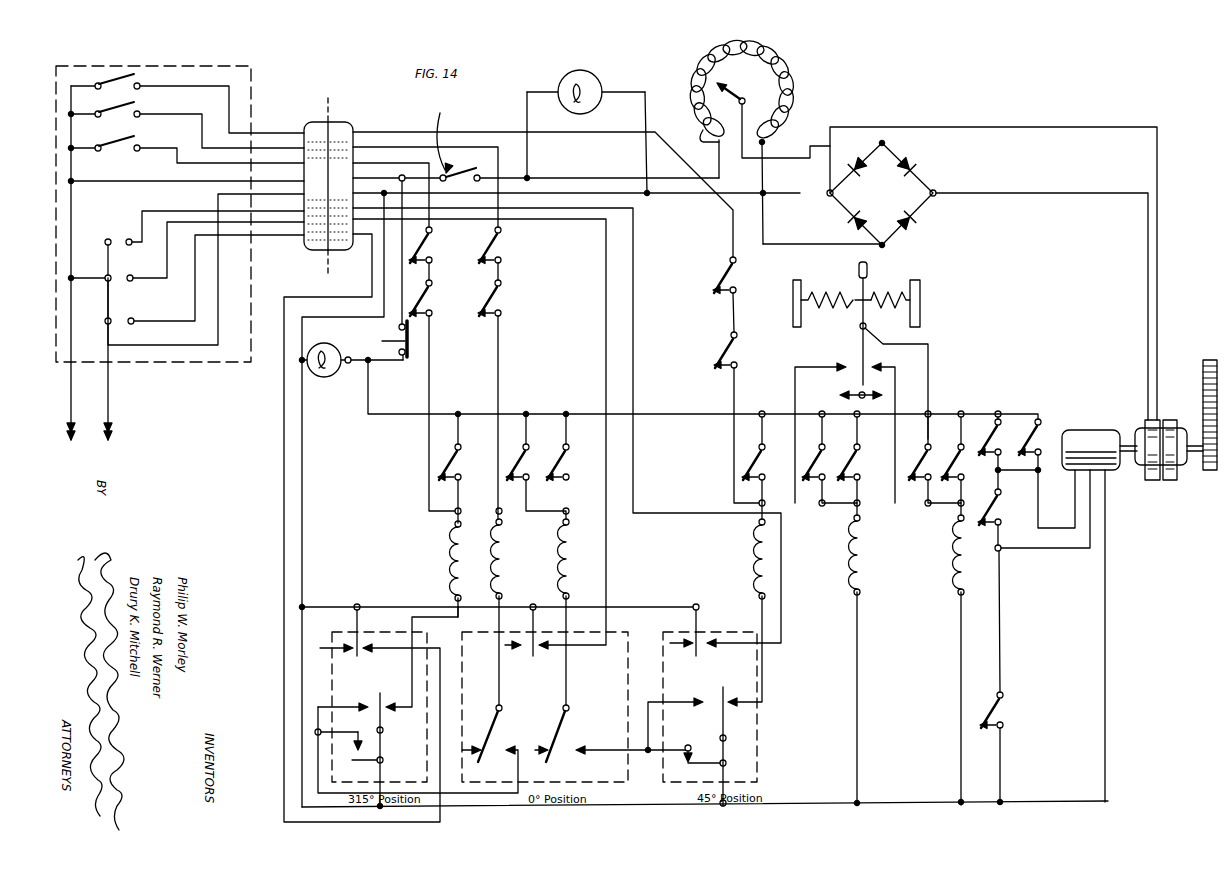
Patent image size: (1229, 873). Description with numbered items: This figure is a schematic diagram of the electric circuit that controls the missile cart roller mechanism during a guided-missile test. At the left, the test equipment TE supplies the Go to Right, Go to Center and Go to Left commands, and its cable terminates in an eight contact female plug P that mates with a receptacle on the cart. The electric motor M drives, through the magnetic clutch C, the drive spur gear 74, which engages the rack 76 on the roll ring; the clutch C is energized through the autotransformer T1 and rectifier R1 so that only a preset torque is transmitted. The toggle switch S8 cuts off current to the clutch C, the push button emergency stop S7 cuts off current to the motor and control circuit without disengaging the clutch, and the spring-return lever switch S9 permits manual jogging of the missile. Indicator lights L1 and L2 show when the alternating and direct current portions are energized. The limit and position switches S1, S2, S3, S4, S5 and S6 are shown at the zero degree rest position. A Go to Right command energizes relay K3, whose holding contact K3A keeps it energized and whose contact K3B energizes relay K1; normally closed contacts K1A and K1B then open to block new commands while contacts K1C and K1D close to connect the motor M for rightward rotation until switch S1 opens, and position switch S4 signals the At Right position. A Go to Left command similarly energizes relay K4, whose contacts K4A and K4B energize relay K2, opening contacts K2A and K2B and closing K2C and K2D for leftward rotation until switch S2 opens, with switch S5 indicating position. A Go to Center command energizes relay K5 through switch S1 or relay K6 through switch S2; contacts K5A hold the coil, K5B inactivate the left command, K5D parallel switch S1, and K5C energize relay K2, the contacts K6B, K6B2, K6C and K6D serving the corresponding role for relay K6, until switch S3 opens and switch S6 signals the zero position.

The drive spur gear 74 is at (1207, 470).
The rack 76 is at (1205, 362).
The electric motor M is at (1080, 428).
The magnetic clutch C is at (1163, 420).
The autotransformer T1 is at (800, 103).
The rectifier R1 is at (896, 236).
The indicator light L1 is at (328, 372).
The indicator light L2 is at (585, 80).
The toggle switch S8 is at (568, 139).
The spring return to center lever switch S9 is at (870, 288).
The push button manual reset emergency stop switch S7 is at (385, 339).
The test equipment TE is at (256, 80).
The eight contact female plug P is at (314, 123).
The relay K1 is at (969, 555).
The relay K2 is at (865, 555).
The relay K3 is at (746, 559).
The relay K4 is at (466, 561).
The relay K5 is at (574, 559).
The relay K6 is at (507, 559).
The limit switch S1 is at (685, 744).
The limit switch S2 is at (418, 746).
The limit switch S3 is at (555, 733).
The position indicator switch S4 is at (710, 693).
The position indicator switch S5 is at (373, 693).
The position indicator switch S6 is at (545, 693).
The normally closed contact K1A is at (434, 245).
The normally closed contact K1B is at (503, 245).
The normally open contact K1C is at (1006, 677).
The normally open contact K1D is at (1042, 437).
The normally closed contact K2A is at (503, 298).
The normally closed contact K2B is at (741, 275).
The normally open contact K2C is at (1002, 436).
The normally open contact K2D is at (1004, 490).
The normally open contact K3A is at (767, 449).
The normally open contact K3B is at (965, 449).
The normally open contact K4A is at (462, 447).
The normally open contact K4B is at (861, 449).
The normally open contact K5A is at (570, 447).
The normally closed contact K5B is at (434, 298).
The normally open contact K5C is at (826, 449).
The normally open contact K5D is at (682, 746).
The relay K6 contact K6B is at (742, 350).
The relay contact K6B2 is at (529, 447).
The relay K6 contact K6C is at (932, 449).
The relay K6 contact K6D is at (365, 745).